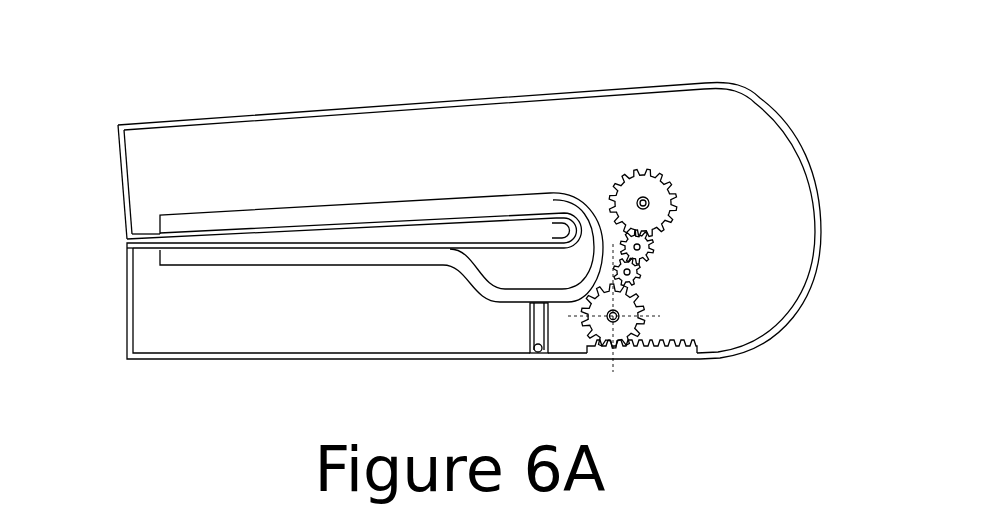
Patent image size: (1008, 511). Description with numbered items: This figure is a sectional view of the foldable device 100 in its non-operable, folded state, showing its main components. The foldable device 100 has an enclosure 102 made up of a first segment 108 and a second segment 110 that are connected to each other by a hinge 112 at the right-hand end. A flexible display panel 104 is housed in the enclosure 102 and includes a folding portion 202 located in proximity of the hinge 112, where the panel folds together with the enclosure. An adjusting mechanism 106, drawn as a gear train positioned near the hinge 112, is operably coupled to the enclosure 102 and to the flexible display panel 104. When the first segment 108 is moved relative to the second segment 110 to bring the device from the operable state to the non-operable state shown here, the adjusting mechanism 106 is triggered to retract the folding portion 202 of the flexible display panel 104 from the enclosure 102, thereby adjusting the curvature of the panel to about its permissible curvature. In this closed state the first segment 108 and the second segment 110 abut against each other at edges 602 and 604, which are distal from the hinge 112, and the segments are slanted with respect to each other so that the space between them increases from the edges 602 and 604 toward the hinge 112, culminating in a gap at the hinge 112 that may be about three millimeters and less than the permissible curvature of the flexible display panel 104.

The foldable device 100 is at (583, 64).
The enclosure 102 is at (300, 113).
The flexible display panel 104 is at (424, 212).
The adjusting mechanism 106 is at (678, 190).
The first segment 108 is at (194, 153).
The second segment 110 is at (207, 332).
The hinge 112 is at (781, 291).
The folding portion 202 is at (564, 288).
The edge 602 is at (125, 190).
The edge 604 is at (129, 311).